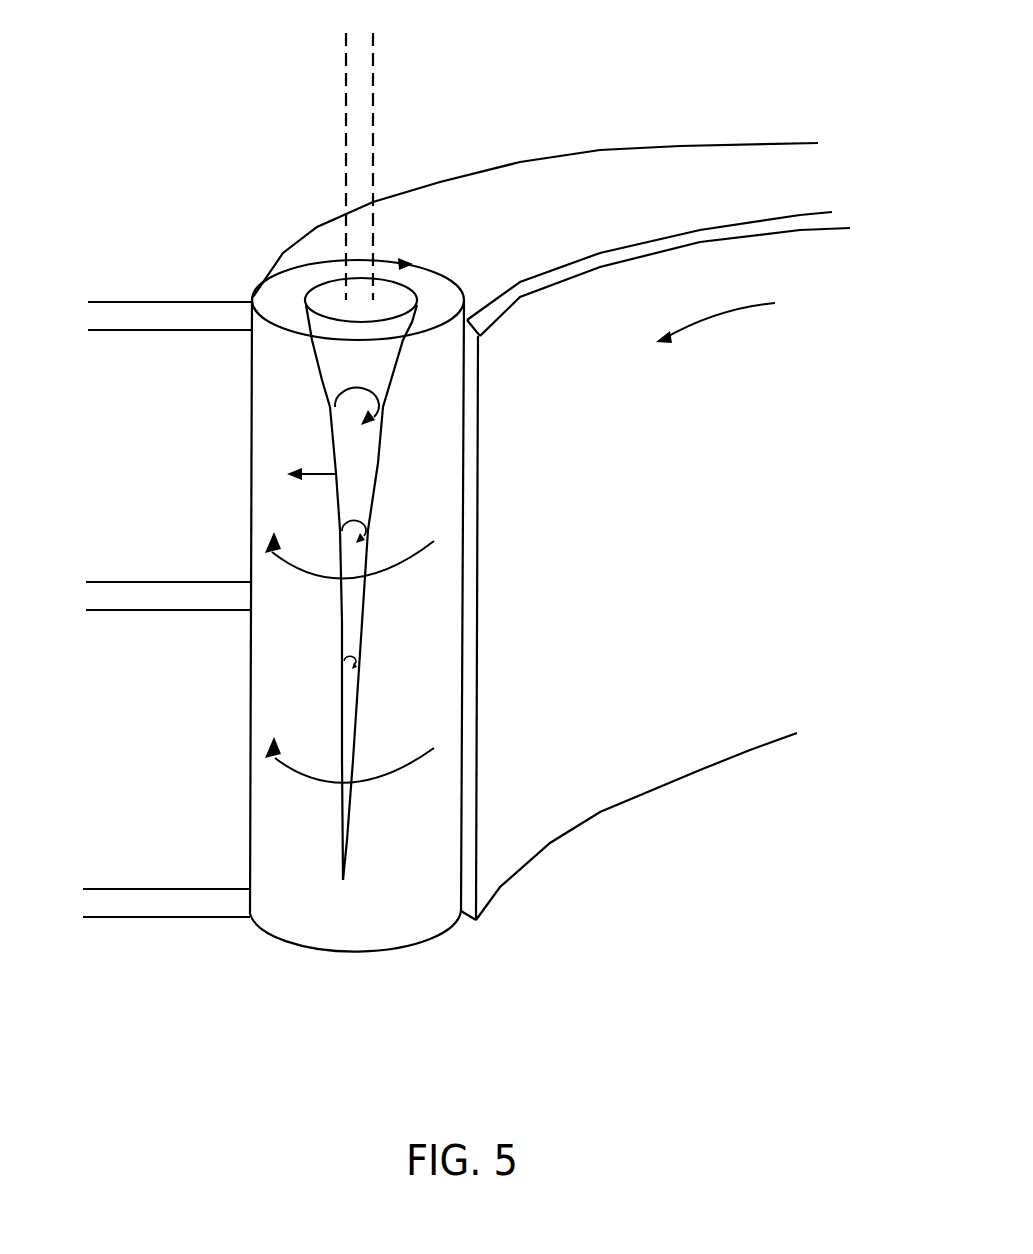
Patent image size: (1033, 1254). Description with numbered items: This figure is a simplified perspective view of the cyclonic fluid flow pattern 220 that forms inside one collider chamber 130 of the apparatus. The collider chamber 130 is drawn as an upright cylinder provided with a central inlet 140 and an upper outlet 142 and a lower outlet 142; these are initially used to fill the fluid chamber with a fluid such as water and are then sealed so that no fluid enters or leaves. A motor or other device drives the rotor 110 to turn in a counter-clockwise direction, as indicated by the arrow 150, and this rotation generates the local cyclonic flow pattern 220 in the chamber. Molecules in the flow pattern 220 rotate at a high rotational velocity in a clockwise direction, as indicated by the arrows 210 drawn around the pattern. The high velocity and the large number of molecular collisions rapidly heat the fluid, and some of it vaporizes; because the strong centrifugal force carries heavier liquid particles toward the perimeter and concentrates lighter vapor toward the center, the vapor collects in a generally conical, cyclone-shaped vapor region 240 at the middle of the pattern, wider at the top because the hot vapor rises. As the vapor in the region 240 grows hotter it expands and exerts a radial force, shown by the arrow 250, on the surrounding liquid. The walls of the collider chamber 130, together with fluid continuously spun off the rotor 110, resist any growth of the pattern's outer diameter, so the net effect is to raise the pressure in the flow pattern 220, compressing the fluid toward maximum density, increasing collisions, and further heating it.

The rotor 110 is at (757, 748).
The collider chamber 130 is at (480, 172).
The central inlet 140 is at (155, 612).
The outlet 142 is at (342, 154).
The arrow 150 is at (733, 313).
The arrows 210 is at (405, 577).
The cyclonic fluid flow pattern 220 is at (248, 771).
The vapor region 240 is at (388, 462).
The arrow 250 is at (318, 469).